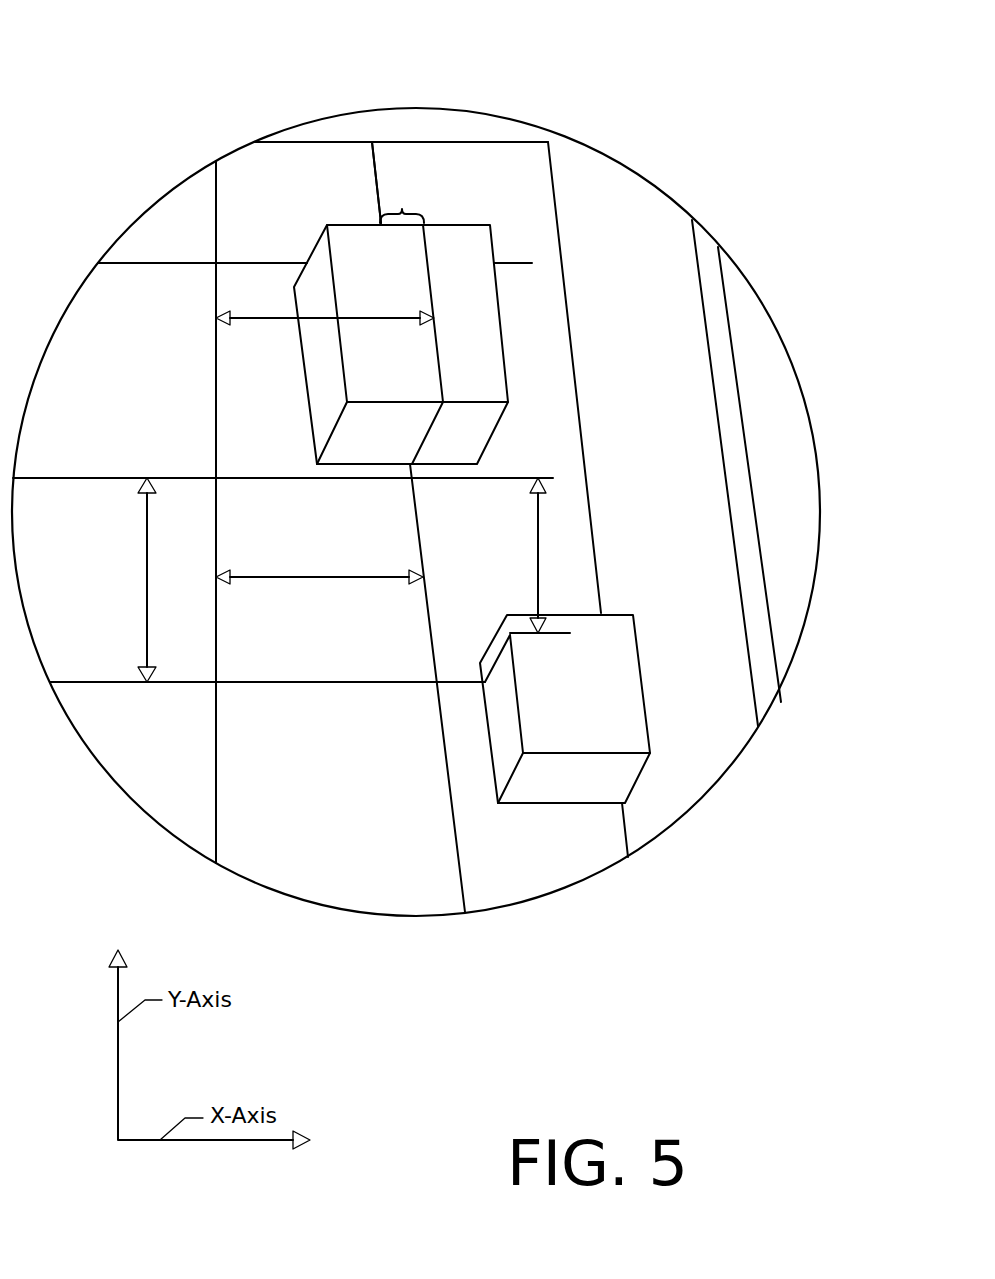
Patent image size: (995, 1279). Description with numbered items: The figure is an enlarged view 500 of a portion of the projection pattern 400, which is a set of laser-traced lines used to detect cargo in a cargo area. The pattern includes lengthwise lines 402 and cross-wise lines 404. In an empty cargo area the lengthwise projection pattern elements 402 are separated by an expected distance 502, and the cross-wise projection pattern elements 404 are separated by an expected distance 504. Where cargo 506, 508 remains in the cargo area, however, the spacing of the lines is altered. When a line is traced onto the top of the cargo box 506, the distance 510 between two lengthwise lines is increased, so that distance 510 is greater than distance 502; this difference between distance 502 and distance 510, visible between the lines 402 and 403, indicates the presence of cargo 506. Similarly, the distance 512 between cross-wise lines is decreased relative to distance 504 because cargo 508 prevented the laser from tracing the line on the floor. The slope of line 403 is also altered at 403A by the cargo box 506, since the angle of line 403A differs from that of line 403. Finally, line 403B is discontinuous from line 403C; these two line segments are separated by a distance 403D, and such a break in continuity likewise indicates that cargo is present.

The enlarged view 500 is at (205, 83).
The projection pattern 400 is at (198, 246).
The lengthwise lines 402 is at (216, 410).
The line 403 is at (417, 531).
The line segment with altered slope 403A is at (429, 430).
The line segment 403B is at (427, 265).
The line segment 403C is at (378, 199).
The distance between line segments 403D is at (402, 208).
The cross-wise lines 404 is at (358, 683).
The expected distance between lengthwise lines 502 is at (352, 575).
The expected distance between cross-wise lines 504 is at (147, 585).
The cargo 506 is at (414, 263).
The cargo 508 is at (613, 628).
The increased distance between lengthwise lines 510 is at (305, 372).
The decreased distance between cross-wise lines 512 is at (538, 555).